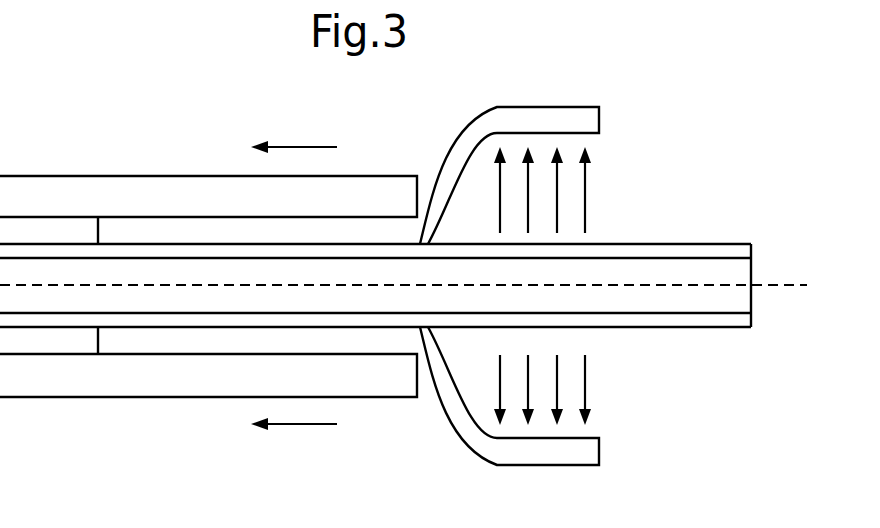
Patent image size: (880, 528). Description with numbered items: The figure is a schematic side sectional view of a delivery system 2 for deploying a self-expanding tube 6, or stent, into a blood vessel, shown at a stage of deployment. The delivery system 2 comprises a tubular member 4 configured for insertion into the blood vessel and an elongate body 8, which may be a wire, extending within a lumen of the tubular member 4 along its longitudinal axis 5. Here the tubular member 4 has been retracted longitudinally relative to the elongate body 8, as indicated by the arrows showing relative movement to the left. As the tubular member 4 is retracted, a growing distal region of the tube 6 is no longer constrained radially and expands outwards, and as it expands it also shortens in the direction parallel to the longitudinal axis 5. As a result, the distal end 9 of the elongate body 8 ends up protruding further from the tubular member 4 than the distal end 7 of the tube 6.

The delivery system 2 is at (680, 95).
The tubular member 4 is at (126, 196).
The longitudinal axis 5 is at (779, 284).
The self-expanding tube 6 is at (523, 120).
The distal end of the tube 7 is at (600, 452).
The elongate body 8 is at (667, 250).
The distal end of the elongate body 9 is at (752, 318).